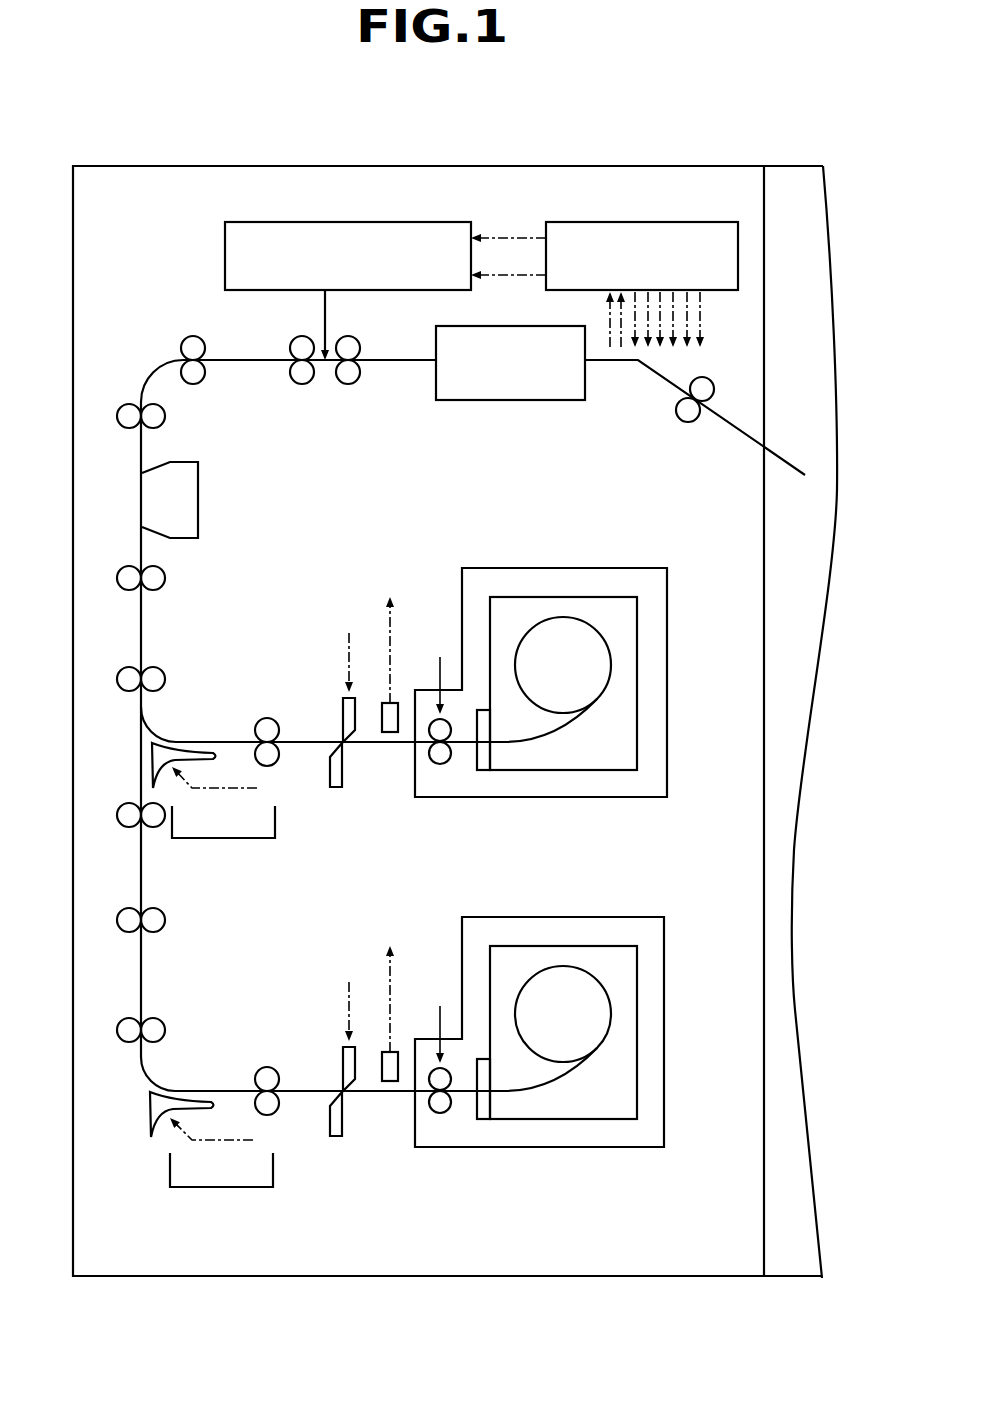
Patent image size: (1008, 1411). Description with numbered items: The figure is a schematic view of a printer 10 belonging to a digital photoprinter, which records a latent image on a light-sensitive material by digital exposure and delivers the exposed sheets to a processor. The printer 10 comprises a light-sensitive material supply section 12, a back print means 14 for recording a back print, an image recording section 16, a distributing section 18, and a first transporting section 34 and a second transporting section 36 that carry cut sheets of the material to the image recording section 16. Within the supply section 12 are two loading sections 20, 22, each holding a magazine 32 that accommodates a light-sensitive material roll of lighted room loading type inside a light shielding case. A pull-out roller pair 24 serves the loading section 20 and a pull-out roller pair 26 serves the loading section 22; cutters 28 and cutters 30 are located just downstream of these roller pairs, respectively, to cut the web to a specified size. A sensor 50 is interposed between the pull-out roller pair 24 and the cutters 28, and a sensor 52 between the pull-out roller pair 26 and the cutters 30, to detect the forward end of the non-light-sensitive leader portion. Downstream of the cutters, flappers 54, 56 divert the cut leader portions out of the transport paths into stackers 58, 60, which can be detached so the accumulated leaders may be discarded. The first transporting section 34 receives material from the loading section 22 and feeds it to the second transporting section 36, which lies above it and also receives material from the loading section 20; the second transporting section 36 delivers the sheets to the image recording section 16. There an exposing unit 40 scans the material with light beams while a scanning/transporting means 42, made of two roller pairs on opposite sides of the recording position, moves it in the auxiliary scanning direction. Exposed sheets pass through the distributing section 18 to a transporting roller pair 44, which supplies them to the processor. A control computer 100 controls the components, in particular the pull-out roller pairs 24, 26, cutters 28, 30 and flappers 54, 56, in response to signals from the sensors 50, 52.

The printer 10 is at (380, 141).
The light-sensitive material supply section 12 is at (705, 868).
The back print means 14 is at (188, 507).
The image recording section 16 is at (195, 300).
The distributing section 18 is at (495, 380).
The loading section 20 is at (667, 605).
The loading section 22 is at (664, 952).
The pull-out roller pair 24 is at (440, 758).
The pull-out roller pair 26 is at (440, 1107).
The cutters 28 is at (340, 703).
The cutters 30 is at (340, 1053).
The magazine 32 is at (550, 597).
The first transporting section 34 is at (210, 975).
The second transporting section 36 is at (206, 626).
The exposing unit 40 is at (333, 245).
The scanning/transporting means 42 is at (336, 392).
The transporting roller pair 44 is at (683, 413).
The sensor 50 is at (392, 712).
The sensor 52 is at (392, 1061).
The flapper 54 is at (167, 760).
The flapper 56 is at (167, 1108).
The stacker 58 is at (245, 838).
The stacker 60 is at (242, 1187).
The control computer 100 is at (616, 245).